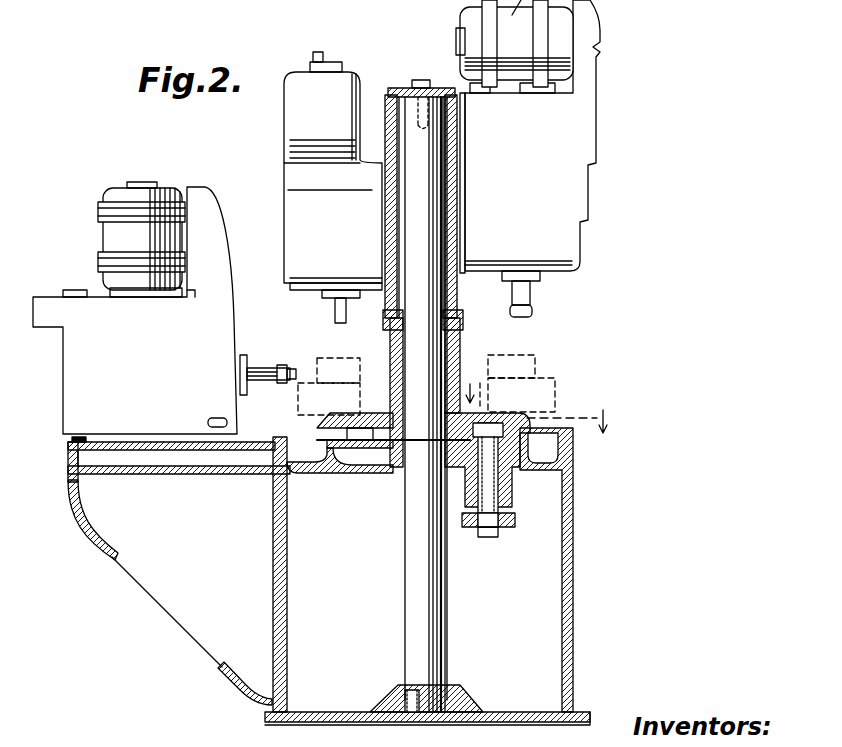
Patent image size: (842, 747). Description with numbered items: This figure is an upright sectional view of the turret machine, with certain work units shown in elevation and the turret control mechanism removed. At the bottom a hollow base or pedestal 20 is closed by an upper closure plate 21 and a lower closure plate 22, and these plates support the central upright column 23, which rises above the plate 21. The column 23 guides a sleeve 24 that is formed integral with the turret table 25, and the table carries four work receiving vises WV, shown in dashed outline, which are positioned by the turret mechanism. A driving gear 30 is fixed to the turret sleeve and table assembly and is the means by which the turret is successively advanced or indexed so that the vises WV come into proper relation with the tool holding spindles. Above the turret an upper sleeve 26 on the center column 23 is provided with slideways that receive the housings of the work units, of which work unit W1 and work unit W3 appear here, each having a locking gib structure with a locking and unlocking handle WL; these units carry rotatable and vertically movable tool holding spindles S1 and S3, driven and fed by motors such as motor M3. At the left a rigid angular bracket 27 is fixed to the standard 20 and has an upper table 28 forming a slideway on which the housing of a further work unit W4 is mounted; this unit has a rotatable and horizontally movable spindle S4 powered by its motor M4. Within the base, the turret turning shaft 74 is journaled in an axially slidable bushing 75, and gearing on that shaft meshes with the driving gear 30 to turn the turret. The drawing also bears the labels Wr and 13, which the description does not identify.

The motor M4 is at (140, 195).
The work unit W3 is at (288, 190).
The motor M3 is at (348, 78).
The upper sleeve 26 is at (455, 207).
The work unit W1 is at (582, 252).
The tool holding spindle S1 is at (533, 296).
The tool holding spindle S3 is at (333, 304).
The winding unit (dashed) Wr is at (345, 400).
The sleeve 24 is at (460, 372).
The turret table 25 is at (500, 410).
The work receiving vises WV is at (565, 394).
The section line 13 is at (551, 399).
The work unit W4 is at (135, 310).
The spindle S4 is at (273, 387).
The locking and unlocking handle WL is at (215, 416).
The upper table 28 is at (170, 447).
The upper closure plate 21 is at (374, 452).
The driving gear 30 is at (390, 440).
The rigid angular bracket 27 is at (158, 575).
The axially slidable bushing 75 is at (506, 525).
The turret turning shaft 74 is at (488, 538).
The central upright column 23 is at (449, 623).
The hollow base 20 is at (576, 611).
The lower closure plate 22 is at (502, 711).